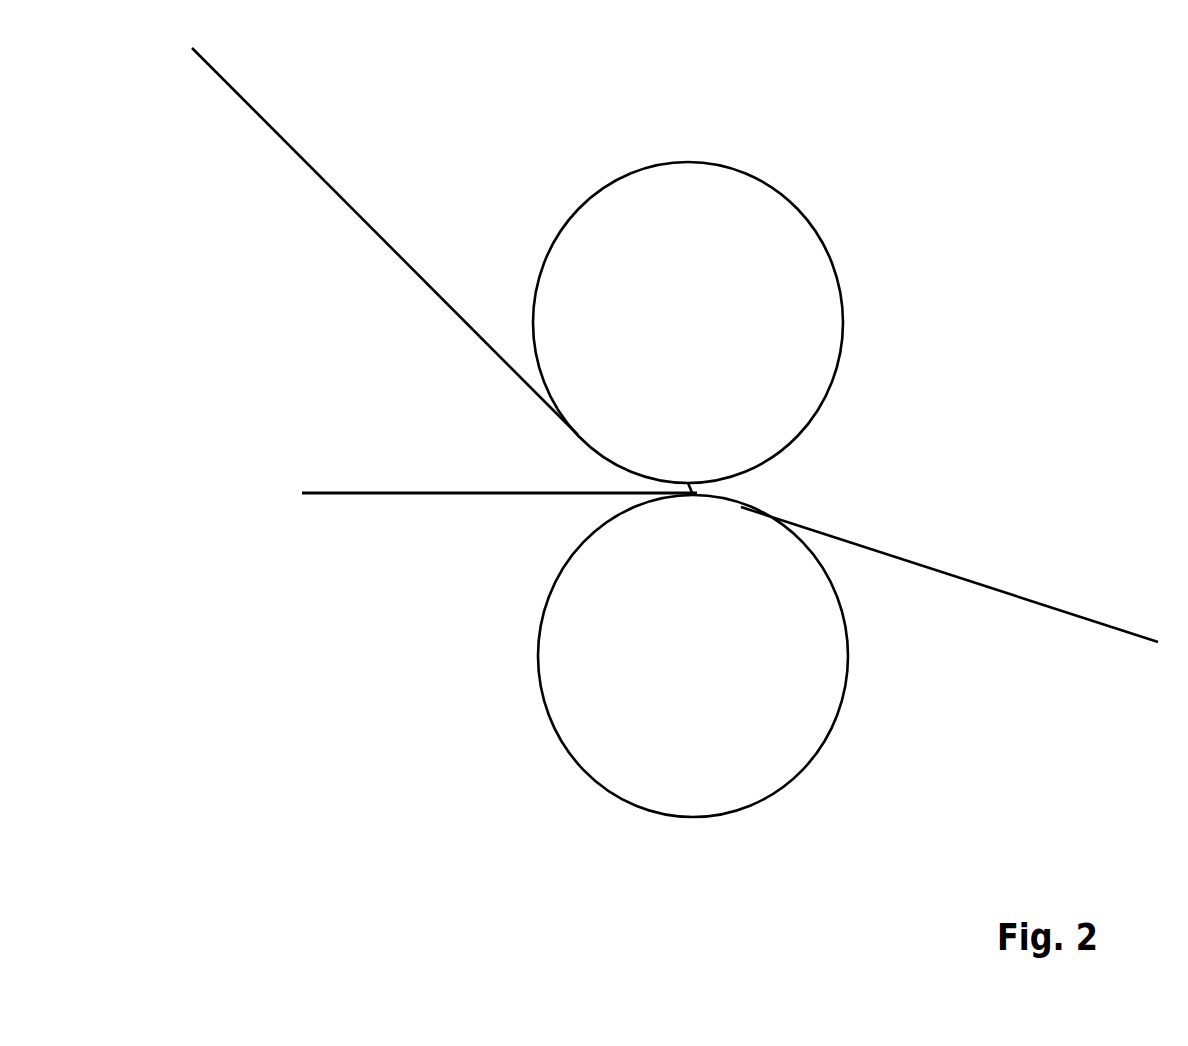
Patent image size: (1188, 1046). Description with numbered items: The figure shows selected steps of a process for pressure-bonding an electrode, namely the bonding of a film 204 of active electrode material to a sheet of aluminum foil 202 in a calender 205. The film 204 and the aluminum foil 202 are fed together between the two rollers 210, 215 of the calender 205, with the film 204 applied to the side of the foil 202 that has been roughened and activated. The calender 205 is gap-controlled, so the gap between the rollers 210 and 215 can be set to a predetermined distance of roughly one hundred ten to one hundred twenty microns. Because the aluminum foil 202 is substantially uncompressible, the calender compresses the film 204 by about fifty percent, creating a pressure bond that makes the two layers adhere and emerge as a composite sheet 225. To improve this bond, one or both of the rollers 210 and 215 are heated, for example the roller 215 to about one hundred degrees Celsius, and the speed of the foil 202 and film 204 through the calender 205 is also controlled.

The aluminum foil 202 is at (433, 492).
The film of active electrode material 204 is at (258, 114).
The calender 205 is at (908, 263).
The roller 210 is at (688, 322).
The roller 215 is at (693, 656).
The composite sheet 225 is at (988, 582).